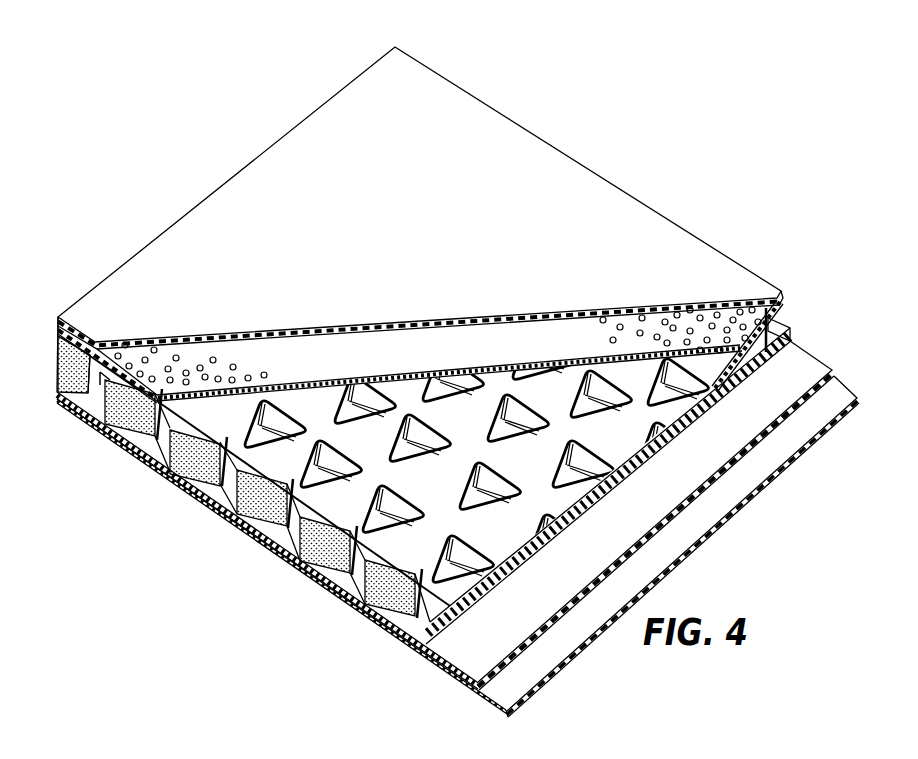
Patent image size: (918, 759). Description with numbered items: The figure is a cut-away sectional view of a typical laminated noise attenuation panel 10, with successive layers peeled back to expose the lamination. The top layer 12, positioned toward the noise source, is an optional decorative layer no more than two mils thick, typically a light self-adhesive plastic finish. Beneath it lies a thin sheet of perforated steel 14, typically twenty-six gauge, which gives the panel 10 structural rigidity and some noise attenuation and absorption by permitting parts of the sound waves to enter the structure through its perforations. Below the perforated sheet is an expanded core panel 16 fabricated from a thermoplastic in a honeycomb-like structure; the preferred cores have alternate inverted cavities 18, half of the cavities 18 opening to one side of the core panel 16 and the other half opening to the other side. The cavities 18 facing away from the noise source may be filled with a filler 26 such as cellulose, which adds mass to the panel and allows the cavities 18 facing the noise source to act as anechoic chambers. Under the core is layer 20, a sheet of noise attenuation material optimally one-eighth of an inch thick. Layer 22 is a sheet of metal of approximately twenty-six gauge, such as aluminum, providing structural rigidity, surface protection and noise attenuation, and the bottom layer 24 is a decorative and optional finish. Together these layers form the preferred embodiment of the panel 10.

The laminated noise attenuation panel 10 is at (632, 158).
The top layer 12 is at (438, 244).
The sheet of perforated steel 14 is at (445, 354).
The expanded core panel 16 is at (475, 412).
The cavities 18 is at (168, 415).
The sheet of noise attenuation material 20 is at (784, 336).
The sheet of metal 22 is at (750, 424).
The decorative layer 24 is at (772, 466).
The filler 26 is at (193, 448).